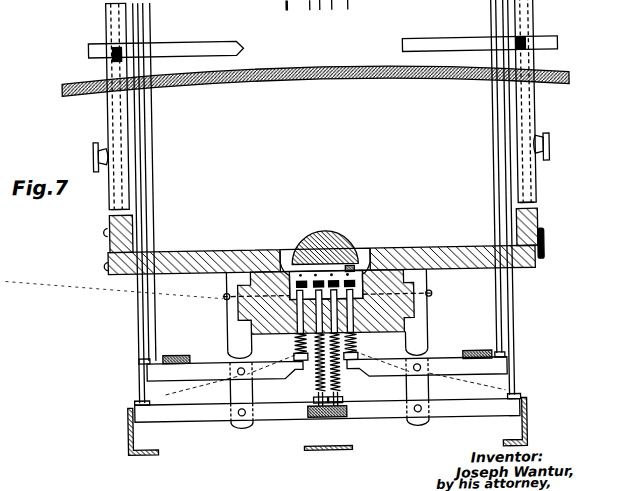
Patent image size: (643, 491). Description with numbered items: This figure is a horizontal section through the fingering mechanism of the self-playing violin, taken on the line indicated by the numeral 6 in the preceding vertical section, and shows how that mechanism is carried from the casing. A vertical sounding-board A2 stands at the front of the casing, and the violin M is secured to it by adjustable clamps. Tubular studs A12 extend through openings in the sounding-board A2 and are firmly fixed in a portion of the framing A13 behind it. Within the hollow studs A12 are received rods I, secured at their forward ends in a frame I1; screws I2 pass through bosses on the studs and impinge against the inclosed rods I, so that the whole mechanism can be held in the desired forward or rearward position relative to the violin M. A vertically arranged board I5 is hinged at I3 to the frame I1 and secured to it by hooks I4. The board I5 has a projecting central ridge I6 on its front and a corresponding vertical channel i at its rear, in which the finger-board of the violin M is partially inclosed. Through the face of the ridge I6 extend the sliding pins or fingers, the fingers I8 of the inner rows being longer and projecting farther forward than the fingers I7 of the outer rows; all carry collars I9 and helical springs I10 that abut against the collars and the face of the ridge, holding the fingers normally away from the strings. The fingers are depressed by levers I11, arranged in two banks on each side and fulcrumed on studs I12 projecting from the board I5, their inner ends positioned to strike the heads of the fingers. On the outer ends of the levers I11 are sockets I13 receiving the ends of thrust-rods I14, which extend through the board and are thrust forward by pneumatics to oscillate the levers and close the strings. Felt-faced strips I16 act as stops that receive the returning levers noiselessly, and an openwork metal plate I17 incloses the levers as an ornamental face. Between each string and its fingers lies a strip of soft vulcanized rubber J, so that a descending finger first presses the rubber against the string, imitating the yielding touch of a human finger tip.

The framing A13 is at (183, 44).
The tubular stud A12 is at (111, 114).
The sounding-board A2 is at (327, 78).
The section line 6— 6 is at (324, 14).
The rod I is at (118, 210).
The frame I1 is at (110, 226).
The screw I2 is at (94, 154).
The hinge I3 is at (545, 247).
The hook I4 is at (110, 246).
The board I5 is at (237, 248).
The central ridge I6 is at (420, 316).
The outer-row finger I7 is at (297, 342).
The inner-row finger I8 is at (313, 385).
The collar I9 is at (298, 355).
The helical spring I10 is at (342, 391).
The lever I11 is at (198, 367).
The stud I12 is at (235, 426).
The socket I13 is at (145, 358).
The thrust-rod I14 is at (155, 138).
The felt-faced stop strip I16 is at (175, 354).
The openwork plate I17 is at (127, 444).
The violin M is at (320, 233).
The rubber strip J is at (290, 268).
The vertical channel i is at (362, 271).